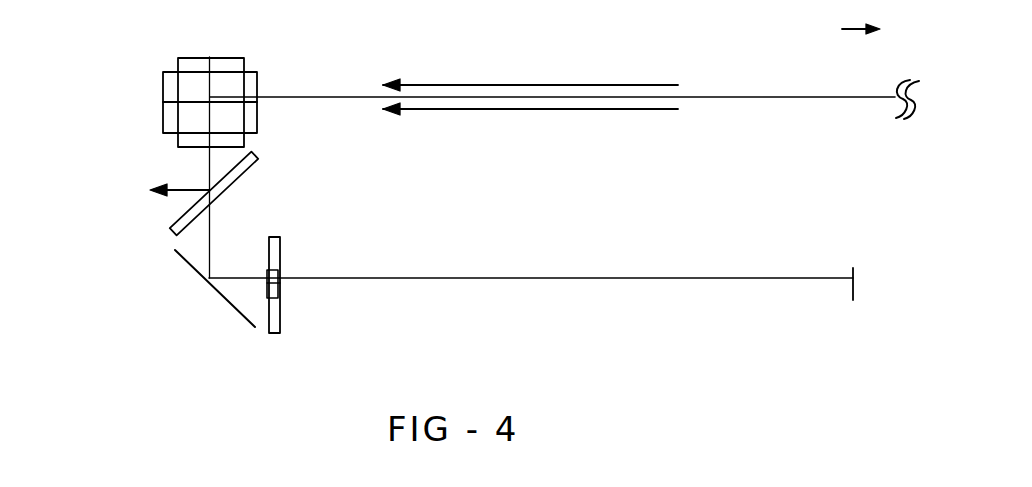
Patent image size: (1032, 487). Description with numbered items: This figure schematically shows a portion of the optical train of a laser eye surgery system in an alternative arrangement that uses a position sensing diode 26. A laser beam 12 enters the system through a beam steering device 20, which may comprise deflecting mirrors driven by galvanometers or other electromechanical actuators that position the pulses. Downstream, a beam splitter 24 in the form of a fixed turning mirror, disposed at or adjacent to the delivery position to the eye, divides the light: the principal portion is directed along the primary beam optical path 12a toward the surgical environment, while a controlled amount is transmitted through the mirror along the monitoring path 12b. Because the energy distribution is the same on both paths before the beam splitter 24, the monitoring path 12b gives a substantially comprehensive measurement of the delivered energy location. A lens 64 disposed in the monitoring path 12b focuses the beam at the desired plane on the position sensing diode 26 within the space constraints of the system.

The laser beam 12 is at (754, 78).
The primary beam optical path 12a is at (162, 178).
The monitoring path 12b is at (695, 273).
The beam steering device 20 is at (153, 101).
The beam splitter 24 is at (256, 183).
The position sensing diode 26 is at (840, 300).
The lens 64 is at (276, 335).